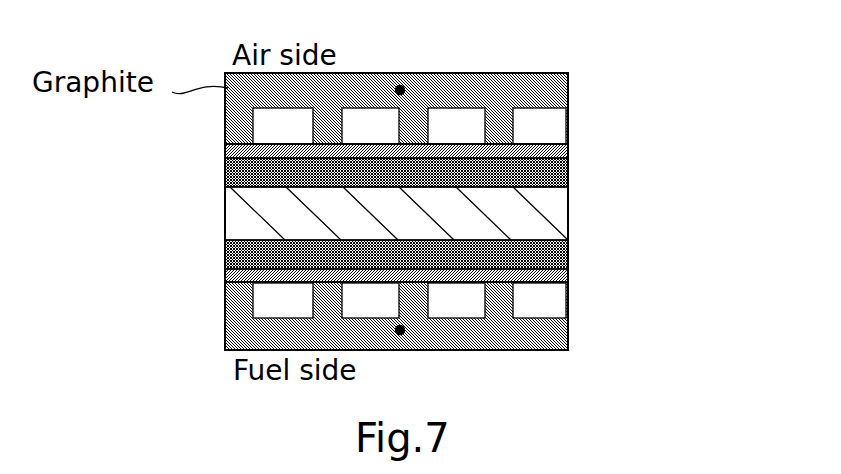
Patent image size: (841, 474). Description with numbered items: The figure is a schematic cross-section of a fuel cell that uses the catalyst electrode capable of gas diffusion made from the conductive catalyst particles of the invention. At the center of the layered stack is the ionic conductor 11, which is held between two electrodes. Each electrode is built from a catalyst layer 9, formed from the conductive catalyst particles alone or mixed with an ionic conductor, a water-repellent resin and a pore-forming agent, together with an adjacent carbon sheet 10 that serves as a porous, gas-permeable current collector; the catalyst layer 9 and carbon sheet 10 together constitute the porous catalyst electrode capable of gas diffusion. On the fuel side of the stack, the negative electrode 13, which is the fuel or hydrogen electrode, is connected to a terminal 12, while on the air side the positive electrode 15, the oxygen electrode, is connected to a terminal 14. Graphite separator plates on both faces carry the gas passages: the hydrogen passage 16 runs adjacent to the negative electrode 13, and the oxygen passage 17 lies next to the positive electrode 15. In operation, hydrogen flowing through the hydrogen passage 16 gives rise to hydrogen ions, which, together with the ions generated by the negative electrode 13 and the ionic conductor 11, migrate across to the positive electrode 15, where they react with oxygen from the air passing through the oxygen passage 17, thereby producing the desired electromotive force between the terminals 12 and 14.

The catalyst layer 9 is at (569, 170).
The carbon sheet 10 is at (569, 150).
The ionic conductor 11 is at (527, 222).
The terminal 12 is at (412, 350).
The negative electrode 13 is at (221, 240).
The terminal 14 is at (435, 83).
The positive electrode 15 is at (221, 142).
The hydrogen passage 16 is at (537, 308).
The oxygen passage 17 is at (550, 126).